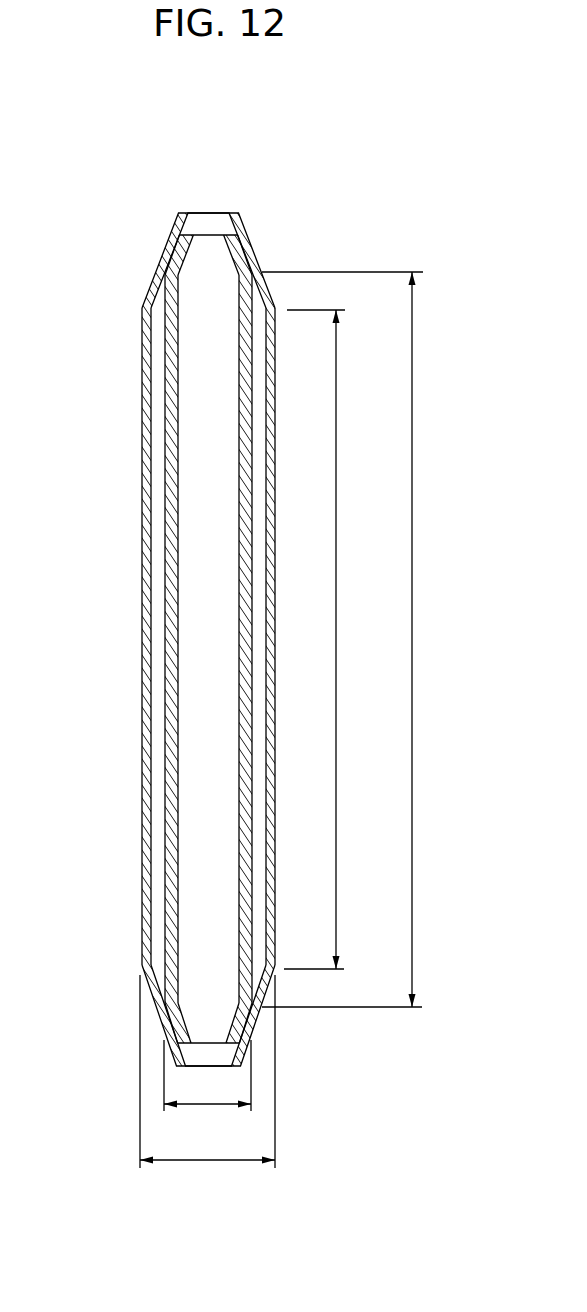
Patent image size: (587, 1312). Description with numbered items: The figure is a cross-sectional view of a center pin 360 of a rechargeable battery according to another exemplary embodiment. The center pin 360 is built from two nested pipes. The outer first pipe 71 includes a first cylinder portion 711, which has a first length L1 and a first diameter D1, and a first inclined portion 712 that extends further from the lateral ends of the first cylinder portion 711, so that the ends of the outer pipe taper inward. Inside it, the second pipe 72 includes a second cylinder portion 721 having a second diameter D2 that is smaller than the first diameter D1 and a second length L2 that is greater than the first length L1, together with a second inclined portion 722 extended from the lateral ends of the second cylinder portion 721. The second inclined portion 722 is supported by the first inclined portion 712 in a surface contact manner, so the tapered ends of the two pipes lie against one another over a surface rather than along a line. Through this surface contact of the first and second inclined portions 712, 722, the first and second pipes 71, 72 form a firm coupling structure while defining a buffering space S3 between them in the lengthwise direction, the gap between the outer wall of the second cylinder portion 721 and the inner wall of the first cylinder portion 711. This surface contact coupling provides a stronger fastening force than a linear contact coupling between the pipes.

The center pin 360 is at (228, 128).
The first pipe 71 is at (173, 656).
The first cylinder portion 711 is at (151, 347).
The first inclined portion 712 is at (152, 291).
The second pipe 72 is at (222, 656).
The second cylinder portion 721 is at (248, 305).
The second inclined portion 722 is at (245, 267).
The buffering space S3 is at (157, 618).
The first length L1 is at (327, 639).
The second length L2 is at (354, 639).
The first diameter D1 is at (207, 1085).
The second diameter D2 is at (207, 1089).